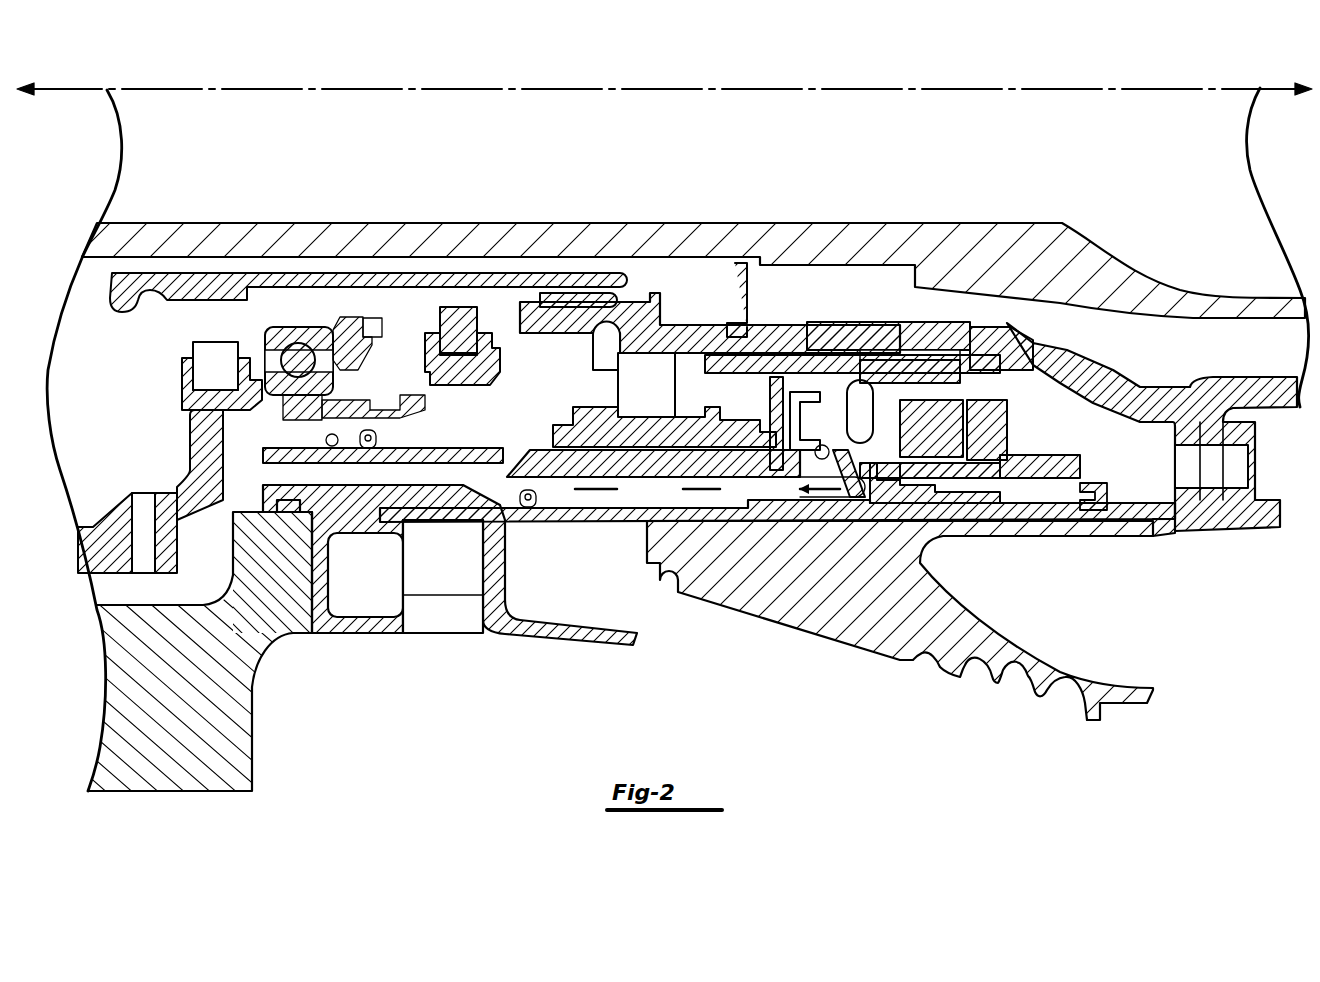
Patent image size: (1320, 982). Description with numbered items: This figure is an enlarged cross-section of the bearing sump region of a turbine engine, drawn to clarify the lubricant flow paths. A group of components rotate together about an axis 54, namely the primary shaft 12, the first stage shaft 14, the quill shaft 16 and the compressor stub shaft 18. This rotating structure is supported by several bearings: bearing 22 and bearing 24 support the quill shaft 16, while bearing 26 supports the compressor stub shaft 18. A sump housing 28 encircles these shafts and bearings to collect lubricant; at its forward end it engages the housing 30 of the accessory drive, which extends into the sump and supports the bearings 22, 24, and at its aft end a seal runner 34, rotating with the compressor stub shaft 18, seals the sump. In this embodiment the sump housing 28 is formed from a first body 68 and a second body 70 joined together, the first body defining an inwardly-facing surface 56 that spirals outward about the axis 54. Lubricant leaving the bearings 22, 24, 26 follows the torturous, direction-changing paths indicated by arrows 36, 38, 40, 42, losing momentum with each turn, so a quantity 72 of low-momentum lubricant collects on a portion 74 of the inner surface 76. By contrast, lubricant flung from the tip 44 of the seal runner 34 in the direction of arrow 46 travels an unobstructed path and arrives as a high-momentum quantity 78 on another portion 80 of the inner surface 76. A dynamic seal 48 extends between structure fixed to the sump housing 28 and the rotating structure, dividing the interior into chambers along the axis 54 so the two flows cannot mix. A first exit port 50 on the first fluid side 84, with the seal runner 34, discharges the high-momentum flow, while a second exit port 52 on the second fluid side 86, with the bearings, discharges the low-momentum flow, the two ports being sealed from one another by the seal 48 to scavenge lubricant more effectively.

The primary shaft 12 is at (270, 232).
The first stage shaft 14 is at (898, 640).
The quill shaft 16 is at (370, 282).
The compressor stub shaft 18 is at (580, 312).
The bearing 22 is at (300, 330).
The bearing 24 is at (455, 330).
The bearing 26 is at (652, 392).
The sump housing 28 is at (372, 626).
The housing 30 is at (173, 555).
The seal runner 34 is at (975, 375).
The direction arrow 36 is at (275, 400).
The direction arrow 38 is at (403, 347).
The direction arrow 40 is at (521, 392).
The direction arrow 42 is at (530, 440).
The tip 44 is at (876, 380).
The arrow 46 is at (838, 405).
The dynamic seal 48 is at (762, 382).
The first exit port 50 is at (553, 504).
The second exit port 52 is at (375, 446).
The axis 54 is at (326, 89).
The inwardly-facing surface 56 is at (858, 487).
The first body 68 is at (840, 513).
The second body 70 is at (620, 468).
The quantity of lubricant 72 is at (338, 448).
The portion 74 is at (567, 400).
The inner surface 76 is at (481, 445).
The quantity of lubricant 78 is at (785, 506).
The portion 80 is at (848, 440).
The first fluid side 84 is at (790, 405).
The second fluid side 86 is at (583, 300).